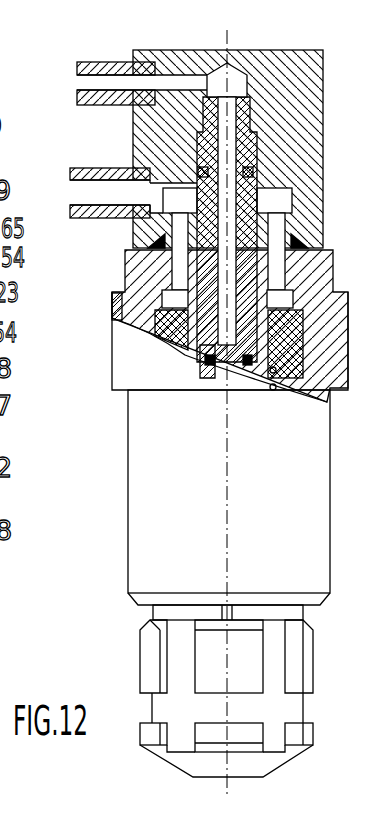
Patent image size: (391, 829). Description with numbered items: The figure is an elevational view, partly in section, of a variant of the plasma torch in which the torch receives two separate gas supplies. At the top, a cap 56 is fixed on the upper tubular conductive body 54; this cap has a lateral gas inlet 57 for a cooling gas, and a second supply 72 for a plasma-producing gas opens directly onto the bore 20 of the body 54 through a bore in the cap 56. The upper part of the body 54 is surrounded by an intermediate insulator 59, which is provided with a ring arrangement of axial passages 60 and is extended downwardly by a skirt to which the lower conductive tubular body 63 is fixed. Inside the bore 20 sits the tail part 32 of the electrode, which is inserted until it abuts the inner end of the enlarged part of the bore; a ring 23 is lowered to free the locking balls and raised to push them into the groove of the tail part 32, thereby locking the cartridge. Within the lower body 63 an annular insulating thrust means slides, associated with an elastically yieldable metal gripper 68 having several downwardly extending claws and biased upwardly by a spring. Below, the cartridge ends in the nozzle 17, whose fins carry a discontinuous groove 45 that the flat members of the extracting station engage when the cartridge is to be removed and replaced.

The nozzle 17 is at (257, 760).
The bore 20 is at (227, 130).
The ring 23 is at (287, 353).
The tail part of the electrode 32 is at (273, 337).
The discontinuous groove 45 is at (300, 700).
The upper tubular conductive body 54 is at (250, 228).
The cap 56 is at (302, 167).
The lateral gas inlet 57 is at (120, 197).
The intermediate insulator 59 is at (313, 277).
The axial passages 60 is at (273, 243).
The lower conductive tubular body 63 is at (160, 552).
The elastically yieldable metal gripper 68 is at (287, 612).
The plasma-producing gas supply 72 is at (118, 85).